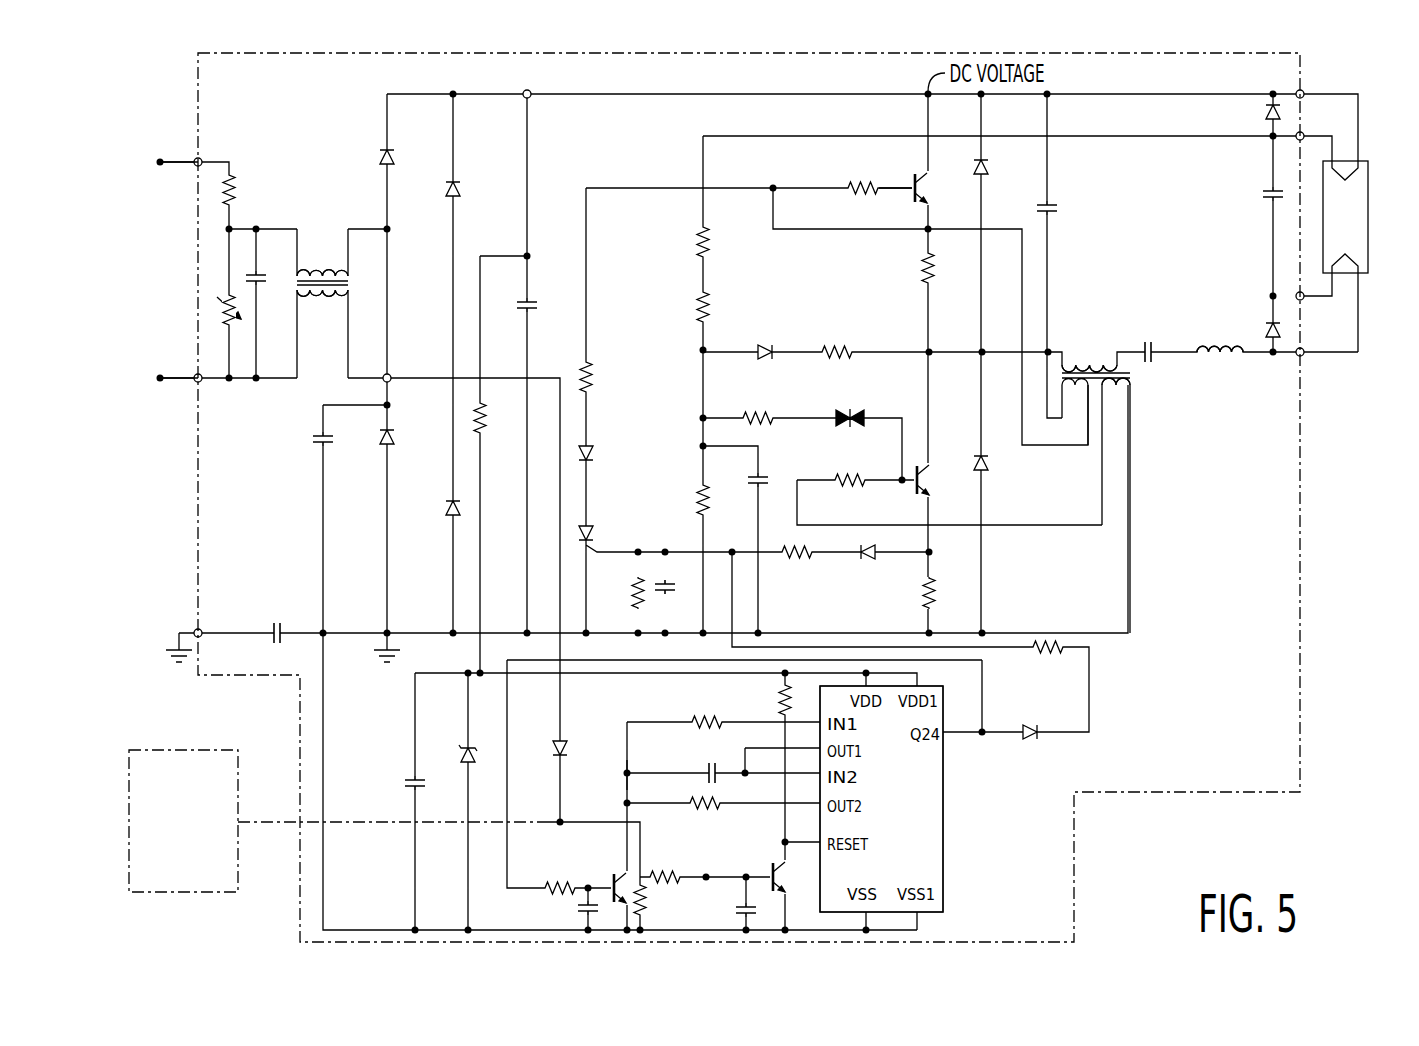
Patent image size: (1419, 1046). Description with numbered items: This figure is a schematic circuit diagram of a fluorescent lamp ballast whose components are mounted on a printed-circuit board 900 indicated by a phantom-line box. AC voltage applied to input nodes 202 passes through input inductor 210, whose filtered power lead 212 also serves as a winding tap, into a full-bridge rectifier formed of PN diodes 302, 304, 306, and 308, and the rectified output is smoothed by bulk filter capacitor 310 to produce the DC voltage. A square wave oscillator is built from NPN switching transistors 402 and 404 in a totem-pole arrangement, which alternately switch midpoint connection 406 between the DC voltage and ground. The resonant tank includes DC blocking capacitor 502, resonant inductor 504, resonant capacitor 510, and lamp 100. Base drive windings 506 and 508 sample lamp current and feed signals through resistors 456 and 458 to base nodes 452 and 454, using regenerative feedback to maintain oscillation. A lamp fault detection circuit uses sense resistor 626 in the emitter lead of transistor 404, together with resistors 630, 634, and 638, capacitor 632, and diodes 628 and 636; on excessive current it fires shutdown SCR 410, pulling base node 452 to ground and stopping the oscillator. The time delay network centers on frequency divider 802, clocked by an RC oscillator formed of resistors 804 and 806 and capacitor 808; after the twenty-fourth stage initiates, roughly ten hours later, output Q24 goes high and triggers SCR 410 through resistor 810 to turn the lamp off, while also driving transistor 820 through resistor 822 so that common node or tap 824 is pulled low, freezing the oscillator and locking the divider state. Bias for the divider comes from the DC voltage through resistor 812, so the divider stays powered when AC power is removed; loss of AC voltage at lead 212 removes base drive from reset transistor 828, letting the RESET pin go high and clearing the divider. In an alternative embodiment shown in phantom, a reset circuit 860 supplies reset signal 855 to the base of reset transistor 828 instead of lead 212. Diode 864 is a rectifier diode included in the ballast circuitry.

The lamp 100 is at (1370, 238).
The input nodes 202 is at (182, 164).
The input inductor 210 is at (333, 270).
The filtered power lead 212 is at (312, 295).
The PN diode 302 is at (394, 157).
The PN diode 304 is at (394, 440).
The PN diode 306 is at (462, 188).
The PN diode 308 is at (446, 507).
The bulk filter capacitor 310 is at (533, 303).
The NPN switching transistor 402 is at (930, 183).
The NPN switching transistor 404 is at (933, 475).
The midpoint connection 406 is at (931, 351).
The shutdown SCR 410 is at (596, 534).
The base node 452 is at (902, 185).
The base node 454 is at (880, 485).
The resistor 456 is at (866, 193).
The resistor 458 is at (862, 478).
The DC blocking capacitor 502 is at (1148, 340).
The resonant inductor 504 is at (1215, 349).
The base drive winding 506 is at (1075, 388).
The base drive winding 508 is at (1118, 386).
The resonant capacitor 510 is at (1266, 193).
The sense resistor 626 is at (936, 598).
The diode 628 is at (870, 560).
The resistor 630 is at (797, 560).
The capacitor 632 is at (669, 585).
The resistor 634 is at (636, 598).
The diode 636 is at (596, 455).
The resistor 638 is at (594, 377).
The frequency divider 802 is at (943, 803).
The resistor 804 is at (703, 716).
The resistor 806 is at (704, 811).
The capacitor 808 is at (711, 766).
The resistor 810 is at (1053, 655).
The resistor 812 is at (487, 420).
The transistor 820 is at (612, 878).
The resistor 822 is at (560, 900).
The common node or tap 824 is at (621, 773).
The reset transistor 828 is at (770, 868).
The reset signal 855 is at (268, 820).
The reset circuit 860 is at (167, 849).
The diode 864 is at (551, 748).
The printed-circuit board 900 is at (1302, 698).